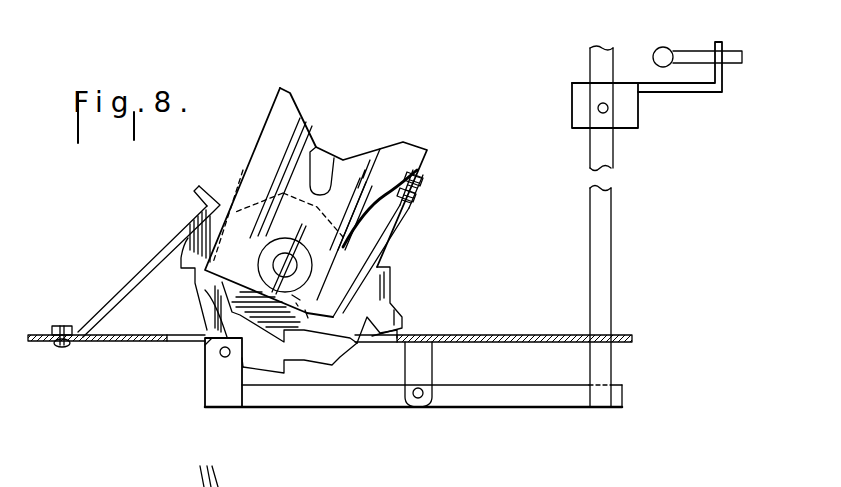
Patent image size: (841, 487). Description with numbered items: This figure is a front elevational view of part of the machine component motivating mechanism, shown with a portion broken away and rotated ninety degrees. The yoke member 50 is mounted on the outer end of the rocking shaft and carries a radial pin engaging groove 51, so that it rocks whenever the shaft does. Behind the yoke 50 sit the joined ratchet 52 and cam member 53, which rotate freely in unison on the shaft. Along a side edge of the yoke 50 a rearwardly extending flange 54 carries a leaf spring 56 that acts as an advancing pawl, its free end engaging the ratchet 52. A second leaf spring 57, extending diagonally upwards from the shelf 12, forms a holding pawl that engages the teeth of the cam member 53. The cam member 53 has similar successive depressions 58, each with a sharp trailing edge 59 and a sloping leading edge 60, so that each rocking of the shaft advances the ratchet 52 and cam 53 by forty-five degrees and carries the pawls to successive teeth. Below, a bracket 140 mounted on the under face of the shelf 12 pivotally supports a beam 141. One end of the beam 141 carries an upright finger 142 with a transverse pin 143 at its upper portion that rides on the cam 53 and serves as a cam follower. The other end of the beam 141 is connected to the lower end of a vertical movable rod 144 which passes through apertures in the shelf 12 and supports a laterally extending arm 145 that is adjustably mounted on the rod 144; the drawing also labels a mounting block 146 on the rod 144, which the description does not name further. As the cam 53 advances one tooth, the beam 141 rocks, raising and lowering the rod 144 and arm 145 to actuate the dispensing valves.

The shelf 12 is at (128, 343).
The yoke member 50 is at (270, 146).
The pin engaging groove 51 is at (320, 150).
The ratchet 52 is at (252, 190).
The cam member 53 is at (203, 308).
The flange 54 is at (420, 168).
The leaf spring 56 is at (387, 243).
The second leaf spring 57 is at (148, 258).
The depressions 58 is at (300, 358).
The trailing edges 59 is at (353, 332).
The leading edges 60 is at (385, 307).
The bracket 140 is at (417, 360).
The beam 141 is at (520, 397).
The upright finger 142 is at (223, 383).
The transverse pin 143 is at (219, 354).
The vertical movable rod 144 is at (607, 237).
The laterally extending arm 145 is at (628, 88).
The bracket 146 is at (580, 110).